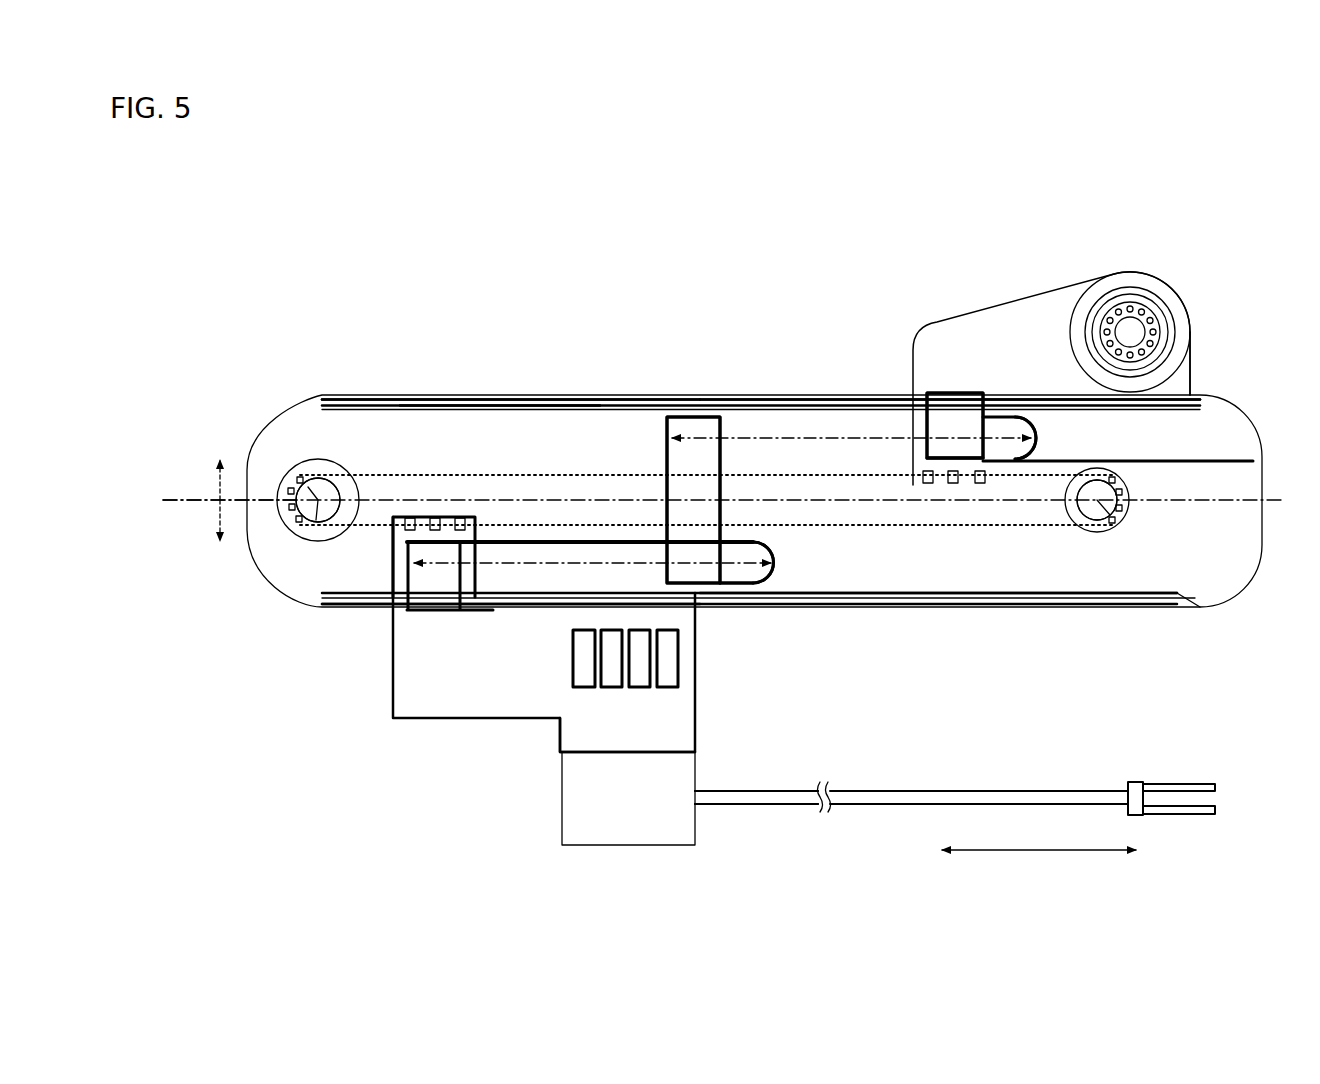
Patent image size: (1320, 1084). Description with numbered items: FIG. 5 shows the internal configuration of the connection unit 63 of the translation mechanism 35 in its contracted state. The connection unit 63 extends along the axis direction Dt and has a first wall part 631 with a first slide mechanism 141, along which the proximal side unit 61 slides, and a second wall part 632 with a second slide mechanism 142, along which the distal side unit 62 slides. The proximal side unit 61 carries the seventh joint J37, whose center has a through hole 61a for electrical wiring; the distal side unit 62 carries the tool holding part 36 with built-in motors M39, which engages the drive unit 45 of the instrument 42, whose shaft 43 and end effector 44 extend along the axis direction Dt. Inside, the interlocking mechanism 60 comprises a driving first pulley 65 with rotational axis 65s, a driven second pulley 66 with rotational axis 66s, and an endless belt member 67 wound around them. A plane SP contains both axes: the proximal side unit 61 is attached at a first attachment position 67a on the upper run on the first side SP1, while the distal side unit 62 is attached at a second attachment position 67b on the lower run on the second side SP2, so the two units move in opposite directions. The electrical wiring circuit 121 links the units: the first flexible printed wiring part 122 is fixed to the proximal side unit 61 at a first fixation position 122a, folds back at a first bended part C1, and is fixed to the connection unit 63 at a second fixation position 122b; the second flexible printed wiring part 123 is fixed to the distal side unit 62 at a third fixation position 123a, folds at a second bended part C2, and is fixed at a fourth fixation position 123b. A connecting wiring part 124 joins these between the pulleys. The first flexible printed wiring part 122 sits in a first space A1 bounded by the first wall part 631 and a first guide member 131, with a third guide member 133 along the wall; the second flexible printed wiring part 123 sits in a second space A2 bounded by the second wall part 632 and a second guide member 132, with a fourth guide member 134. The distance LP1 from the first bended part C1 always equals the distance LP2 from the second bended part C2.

The translation mechanism 35 is at (604, 282).
The interlocking mechanism 60 is at (1100, 449).
The proximal side unit 61 is at (993, 328).
The through hole 61a is at (1132, 317).
The seventh joint J37 is at (1206, 338).
The first space A1 is at (1193, 433).
The connection unit 63 is at (334, 395).
The first slide mechanism 141 is at (378, 395).
The first wall part 631 is at (473, 395).
The third guide member 133 is at (829, 398).
The first guide member 131 is at (1222, 461).
The second wall part 632 is at (1060, 598).
The second slide mechanism 142 is at (910, 607).
The fourth guide member 134 is at (976, 607).
The belt member 67 is at (388, 474).
The first attachment position 67a is at (908, 458).
The second attachment position 67b is at (392, 531).
The first pulley 65 is at (315, 493).
The rotational axis of the first pulley 65s is at (302, 527).
The second pulley 66 is at (1132, 497).
The rotational axis of the second pulley 66s is at (1120, 521).
The first flexible printed wiring part 122 is at (779, 398).
The first fixation position 122a is at (960, 462).
The second fixation position 122b is at (690, 412).
The first bended part C1 is at (1041, 440).
The distance from the apex of the first bended part LP1 is at (851, 451).
The connecting wiring part 124 is at (665, 452).
The electrical wiring circuit 121 is at (629, 419).
The second guide member 132 is at (733, 537).
The second flexible printed wiring part 123 is at (737, 591).
The third fixation position 123a is at (452, 543).
The fourth fixation position 123b is at (698, 591).
The second bended part C2 is at (784, 563).
The distance from the apex of the second bended part LP2 is at (592, 576).
The second space A2 is at (528, 574).
The plane SP is at (180, 492).
The first side SP1 is at (223, 466).
The second side SP2 is at (223, 538).
The distal side unit 62 is at (400, 688).
The tool holding part 36 is at (577, 727).
The motors M39 is at (584, 687).
The drive unit 45 is at (680, 835).
The instrument 42 is at (796, 830).
The shaft 43 is at (885, 806).
The end effector 44 is at (1180, 816).
The axis direction Dt is at (1039, 840).